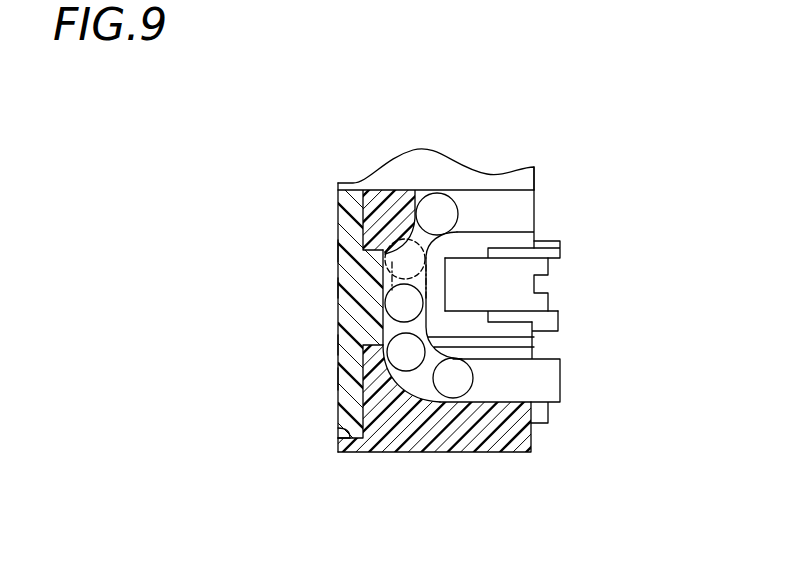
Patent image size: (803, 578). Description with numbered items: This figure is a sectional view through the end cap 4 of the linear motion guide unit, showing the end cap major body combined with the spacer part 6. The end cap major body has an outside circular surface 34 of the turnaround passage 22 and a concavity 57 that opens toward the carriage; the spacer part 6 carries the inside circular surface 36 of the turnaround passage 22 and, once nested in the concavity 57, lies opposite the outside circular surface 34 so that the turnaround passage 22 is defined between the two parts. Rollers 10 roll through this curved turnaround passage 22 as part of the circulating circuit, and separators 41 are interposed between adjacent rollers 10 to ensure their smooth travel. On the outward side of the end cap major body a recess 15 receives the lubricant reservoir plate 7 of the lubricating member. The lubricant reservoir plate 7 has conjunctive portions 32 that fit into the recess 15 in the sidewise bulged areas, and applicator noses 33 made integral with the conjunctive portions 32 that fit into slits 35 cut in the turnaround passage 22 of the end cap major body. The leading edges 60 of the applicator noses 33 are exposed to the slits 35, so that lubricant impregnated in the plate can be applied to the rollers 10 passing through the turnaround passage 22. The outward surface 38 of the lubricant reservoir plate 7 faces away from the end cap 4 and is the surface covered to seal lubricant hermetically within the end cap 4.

The end cap 4 is at (461, 434).
The lubricant reservoir plate 7 is at (339, 232).
The outward surface 38 is at (338, 253).
The slit 35 is at (350, 293).
The applicator nose 33 is at (338, 343).
The conjunctive portion 32 is at (345, 378).
The recess 15 is at (353, 189).
The leading edge 60 is at (398, 243).
The inside circular surface 36 is at (447, 232).
The roller 10 is at (437, 207).
The separator 41 is at (385, 275).
The turnaround passage 22 is at (508, 212).
The spacer part 6 is at (497, 242).
The concavity 57 is at (477, 311).
The outside circular surface 34 is at (420, 385).